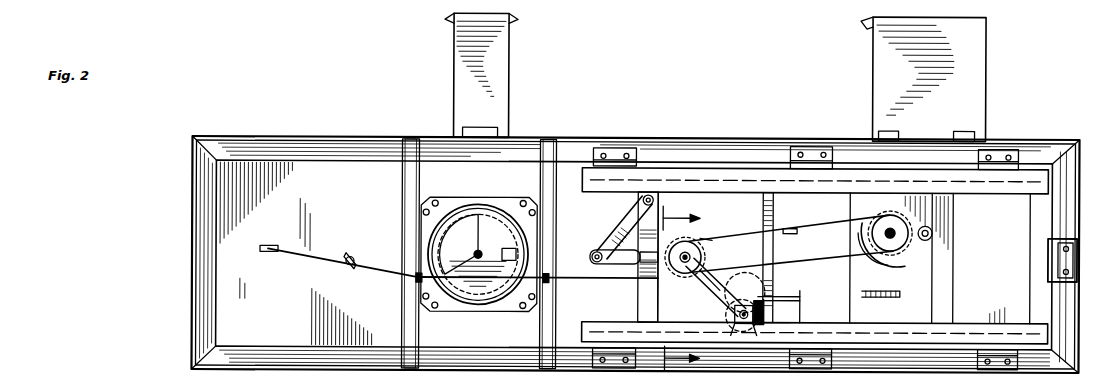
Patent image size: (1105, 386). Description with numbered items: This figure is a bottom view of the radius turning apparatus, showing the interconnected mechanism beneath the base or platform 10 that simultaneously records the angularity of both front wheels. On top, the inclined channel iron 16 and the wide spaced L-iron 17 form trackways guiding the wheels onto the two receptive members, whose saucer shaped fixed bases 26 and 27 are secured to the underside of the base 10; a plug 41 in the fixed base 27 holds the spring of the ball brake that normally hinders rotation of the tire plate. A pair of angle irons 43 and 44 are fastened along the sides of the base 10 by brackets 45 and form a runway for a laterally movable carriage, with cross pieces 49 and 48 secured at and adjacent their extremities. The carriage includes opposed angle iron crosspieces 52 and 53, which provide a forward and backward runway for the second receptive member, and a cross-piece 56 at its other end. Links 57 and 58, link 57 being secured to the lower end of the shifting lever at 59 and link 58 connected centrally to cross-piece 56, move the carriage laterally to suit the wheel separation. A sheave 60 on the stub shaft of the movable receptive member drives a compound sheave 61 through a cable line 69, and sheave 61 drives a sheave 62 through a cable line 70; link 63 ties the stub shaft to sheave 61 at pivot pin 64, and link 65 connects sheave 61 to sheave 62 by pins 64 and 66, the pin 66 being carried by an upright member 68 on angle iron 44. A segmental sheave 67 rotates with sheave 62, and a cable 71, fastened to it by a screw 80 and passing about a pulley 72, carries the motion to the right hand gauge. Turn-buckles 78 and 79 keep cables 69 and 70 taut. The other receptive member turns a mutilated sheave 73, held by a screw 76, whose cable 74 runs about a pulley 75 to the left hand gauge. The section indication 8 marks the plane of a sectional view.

The section line 8- 8 is at (685, 288).
The base or platform 10 is at (373, 140).
The inclined channel iron 16 is at (500, 82).
The wide spaced L-iron 17 is at (965, 87).
The saucer shaped fixed base 26 is at (462, 198).
The saucer shaped fixed base 27 is at (876, 298).
The plug 41 is at (896, 245).
The angle iron 43 is at (593, 193).
The angle iron 44 is at (588, 322).
The brackets 45 is at (640, 152).
The cross piece or angle iron 48 is at (640, 301).
The cross piece or angle iron 49 is at (1032, 306).
The angle iron crosspiece 52 is at (802, 312).
The angle iron crosspiece 53 is at (953, 285).
The cross-piece 56 is at (765, 216).
The link 57 is at (615, 229).
The link 58 is at (610, 266).
The connection to lever 59 is at (655, 200).
The pulley or sheave 60 is at (895, 222).
The compound sheave 61 is at (685, 242).
The sheave 62 is at (733, 317).
The link 63 is at (810, 228).
The pivot pin 64 is at (655, 278).
The link 65 is at (700, 288).
The pin 66 is at (778, 326).
The segmental pulley or sheave 67 is at (786, 296).
The upright member 68 is at (735, 326).
The cable line 69 is at (718, 240).
The cable line 70 is at (726, 276).
The cable 71 is at (572, 278).
The pulley 72 is at (350, 257).
The mutilated sheave 73 is at (465, 252).
The cable 74 is at (336, 262).
The pulley 75 is at (270, 256).
The screw 76 is at (500, 246).
The turn-buckle 78 is at (790, 230).
The turn-buckle 79 is at (700, 306).
The screw 80 is at (766, 305).